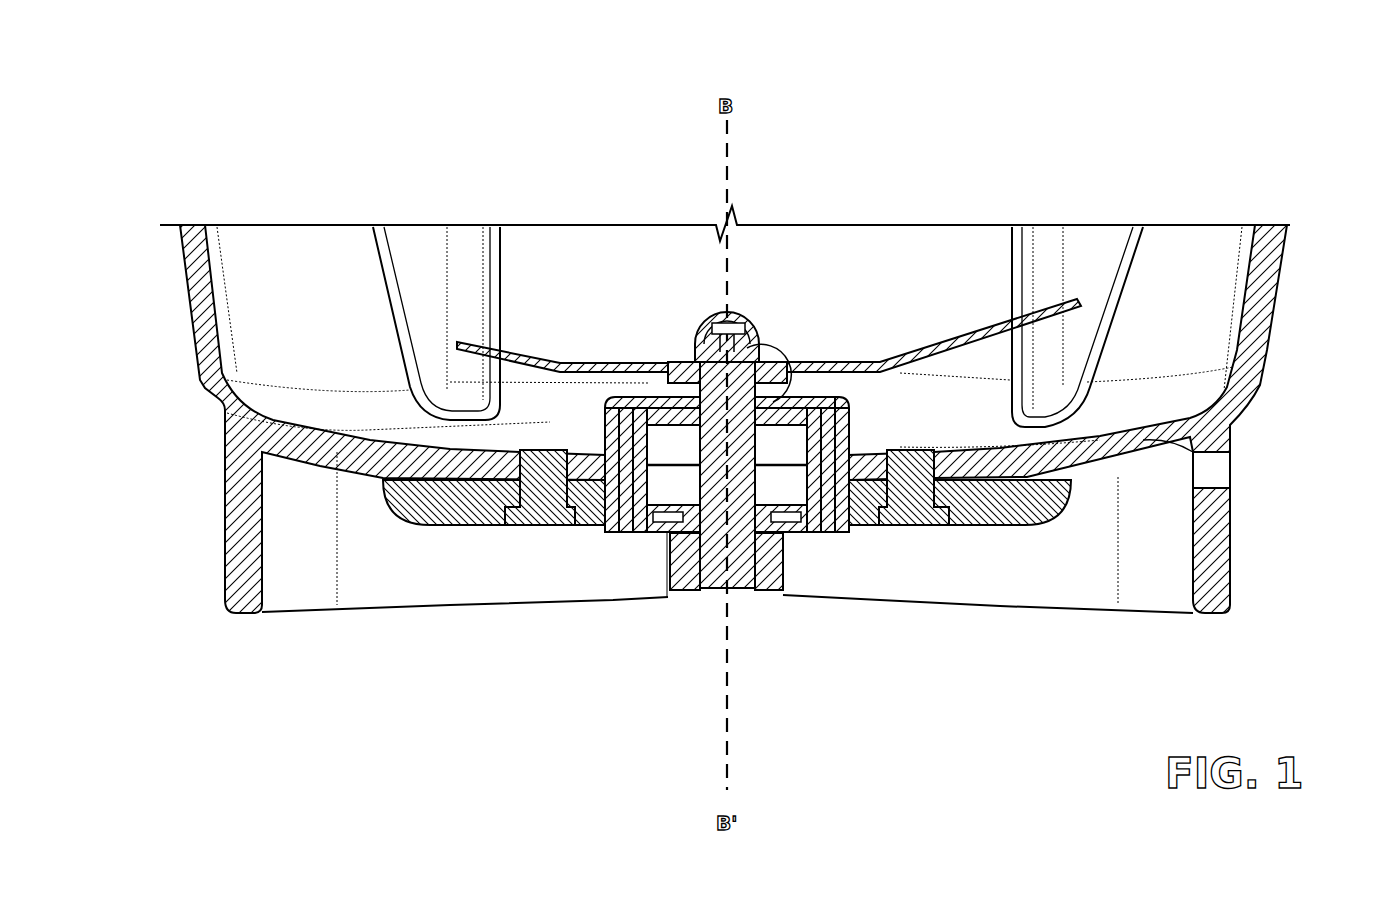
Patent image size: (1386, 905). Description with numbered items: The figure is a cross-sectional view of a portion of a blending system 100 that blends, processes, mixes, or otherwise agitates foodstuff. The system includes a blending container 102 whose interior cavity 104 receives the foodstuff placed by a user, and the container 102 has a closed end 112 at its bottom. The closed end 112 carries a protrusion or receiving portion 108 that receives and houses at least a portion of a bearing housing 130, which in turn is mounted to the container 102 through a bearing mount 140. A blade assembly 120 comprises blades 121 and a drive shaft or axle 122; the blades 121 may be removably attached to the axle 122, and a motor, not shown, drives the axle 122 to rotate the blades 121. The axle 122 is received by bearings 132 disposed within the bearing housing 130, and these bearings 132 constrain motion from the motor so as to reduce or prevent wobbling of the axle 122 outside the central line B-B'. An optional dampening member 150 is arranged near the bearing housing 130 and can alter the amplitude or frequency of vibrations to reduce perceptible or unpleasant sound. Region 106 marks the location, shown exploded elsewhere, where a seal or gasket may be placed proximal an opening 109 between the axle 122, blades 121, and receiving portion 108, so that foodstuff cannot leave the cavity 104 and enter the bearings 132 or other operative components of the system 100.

The blending system 100 is at (141, 108).
The blending container 102 is at (1252, 287).
The cavity 104 is at (1092, 236).
The region 106 is at (790, 360).
The receiving portion 108 is at (840, 400).
The opening 109 is at (763, 402).
The closed end 112 is at (1167, 462).
The blade assembly 120 is at (693, 300).
The blades 121 is at (488, 340).
The axle 122 is at (772, 350).
The bearing housing 130 is at (638, 508).
The bearings 132 is at (670, 450).
The bearing mount 140 is at (262, 452).
The dampening member 150 is at (830, 522).